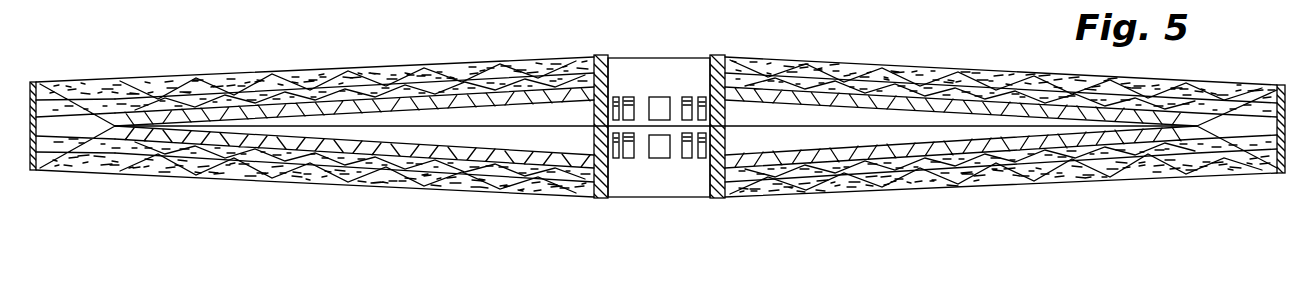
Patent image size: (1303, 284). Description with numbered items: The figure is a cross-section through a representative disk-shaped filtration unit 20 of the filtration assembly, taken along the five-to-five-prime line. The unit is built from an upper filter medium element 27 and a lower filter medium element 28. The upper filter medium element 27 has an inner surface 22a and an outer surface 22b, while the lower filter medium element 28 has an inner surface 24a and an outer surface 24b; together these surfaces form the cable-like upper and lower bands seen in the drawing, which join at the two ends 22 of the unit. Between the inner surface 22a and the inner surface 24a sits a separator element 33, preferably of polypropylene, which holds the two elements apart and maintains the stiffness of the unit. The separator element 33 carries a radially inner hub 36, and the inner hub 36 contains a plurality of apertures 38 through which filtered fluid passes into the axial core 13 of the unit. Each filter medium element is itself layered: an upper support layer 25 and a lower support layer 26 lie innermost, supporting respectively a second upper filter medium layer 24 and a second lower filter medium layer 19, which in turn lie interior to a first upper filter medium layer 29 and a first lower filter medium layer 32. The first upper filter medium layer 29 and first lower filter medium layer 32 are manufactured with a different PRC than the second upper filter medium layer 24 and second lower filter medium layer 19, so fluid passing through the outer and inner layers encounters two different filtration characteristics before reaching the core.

The axial core 13 is at (699, 212).
The second lower filter medium layer 19 is at (398, 163).
The filtration unit 20 is at (205, 38).
The cable end 22 is at (57, 90).
The inner surface 22a is at (523, 93).
The outer surface 22b is at (538, 58).
The second upper filter medium layer 24 is at (340, 90).
The inner surface 24a is at (316, 148).
The outer surface 24b is at (287, 180).
The upper support layer 25 is at (420, 100).
The lower support layer 26 is at (350, 152).
The upper filter medium element 27 is at (601, 90).
The lower filter medium element 28 is at (610, 165).
The first upper filter medium layer 29 is at (287, 80).
The first lower filter medium layer 32 is at (477, 187).
The separator element 33 is at (873, 120).
The inner hub 36 is at (659, 74).
The apertures 38 is at (660, 150).